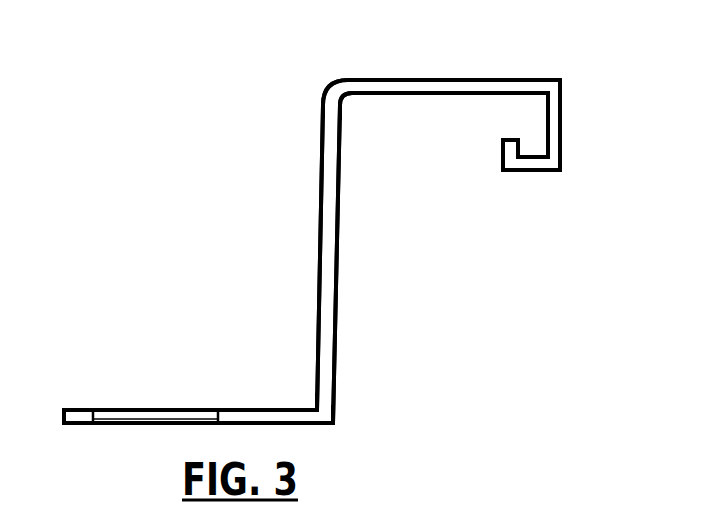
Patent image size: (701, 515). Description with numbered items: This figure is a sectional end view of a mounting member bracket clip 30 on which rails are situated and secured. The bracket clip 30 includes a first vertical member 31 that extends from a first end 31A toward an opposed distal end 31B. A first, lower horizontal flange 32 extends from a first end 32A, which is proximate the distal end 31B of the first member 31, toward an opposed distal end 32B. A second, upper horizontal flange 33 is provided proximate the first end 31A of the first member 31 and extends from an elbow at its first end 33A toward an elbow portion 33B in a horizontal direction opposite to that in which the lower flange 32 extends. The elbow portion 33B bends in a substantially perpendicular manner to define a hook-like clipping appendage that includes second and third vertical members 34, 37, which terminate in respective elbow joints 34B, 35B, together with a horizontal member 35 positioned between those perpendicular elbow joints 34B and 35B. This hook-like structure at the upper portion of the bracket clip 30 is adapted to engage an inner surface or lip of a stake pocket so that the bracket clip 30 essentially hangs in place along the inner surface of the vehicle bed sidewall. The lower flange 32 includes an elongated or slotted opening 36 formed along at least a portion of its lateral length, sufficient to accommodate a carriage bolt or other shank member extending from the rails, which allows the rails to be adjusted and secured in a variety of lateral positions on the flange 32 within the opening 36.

The bracket clip 30 is at (214, 113).
The first vertical member 31 is at (340, 257).
The first end of first member 31A is at (323, 103).
The distal end of first member 31B is at (326, 408).
The lower horizontal flange 32 is at (237, 408).
The first end of lower flange 32A is at (317, 426).
The distal end of lower flange 32B is at (67, 408).
The upper horizontal flange 33 is at (420, 77).
The first end elbow of upper flange 33A is at (362, 94).
The elbow portion 33B is at (558, 78).
The second vertical member 34 is at (561, 123).
The elbow joint 34B is at (559, 172).
The horizontal member 35 is at (532, 178).
The elbow joint 35B is at (502, 178).
The slotted opening 36 is at (160, 408).
The third vertical member 37 is at (501, 153).